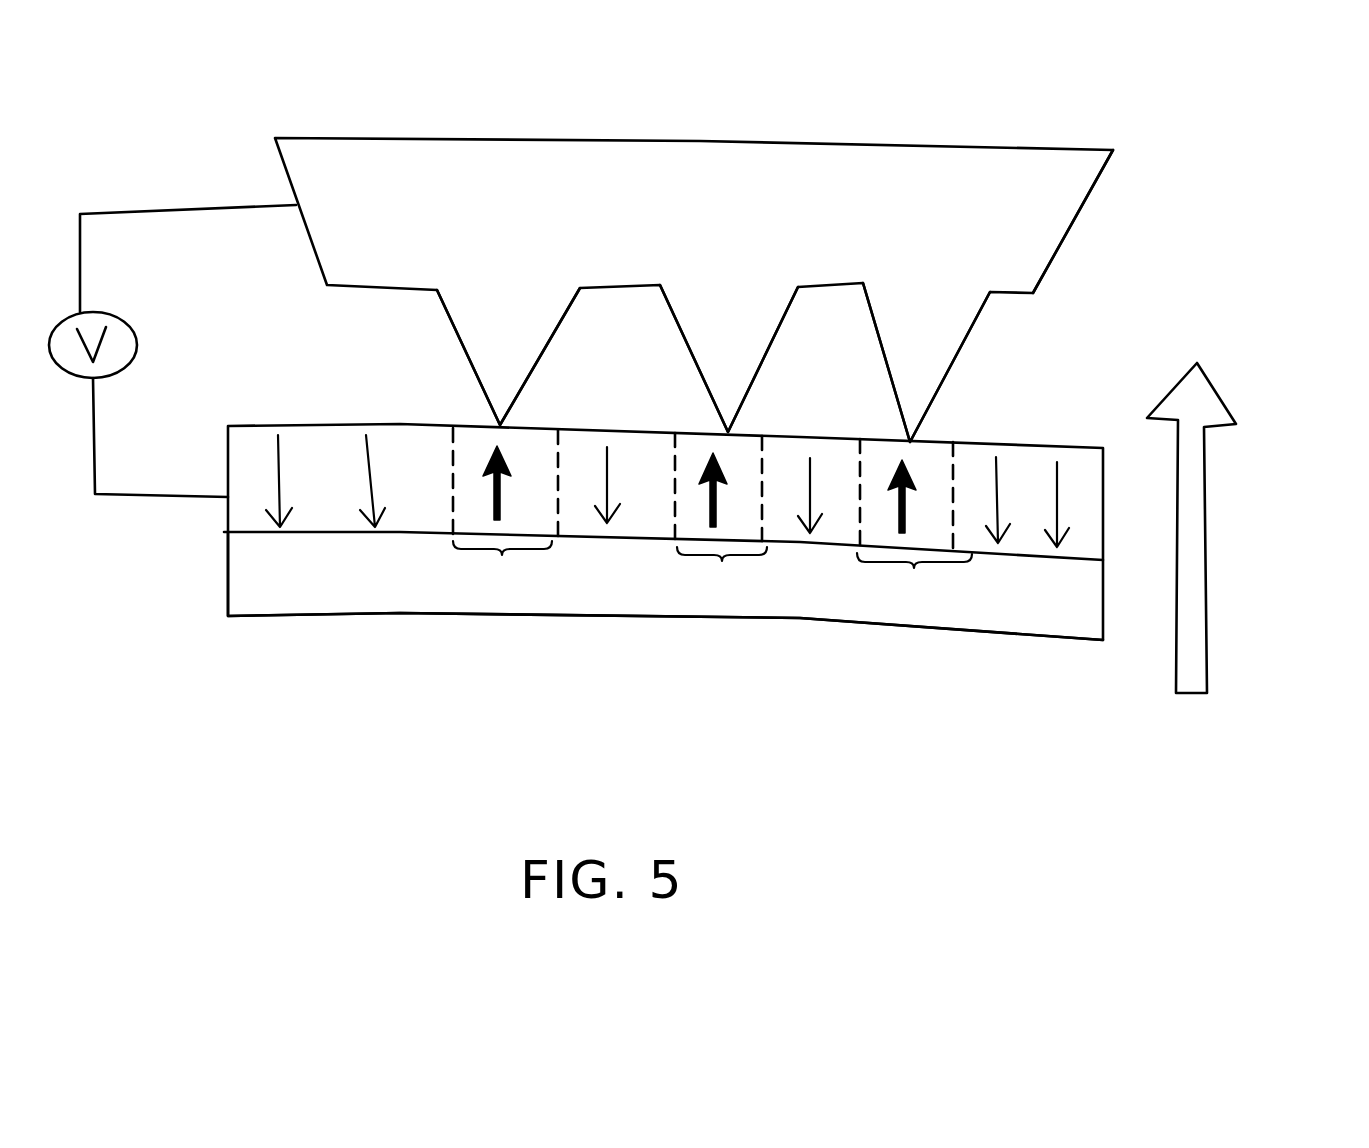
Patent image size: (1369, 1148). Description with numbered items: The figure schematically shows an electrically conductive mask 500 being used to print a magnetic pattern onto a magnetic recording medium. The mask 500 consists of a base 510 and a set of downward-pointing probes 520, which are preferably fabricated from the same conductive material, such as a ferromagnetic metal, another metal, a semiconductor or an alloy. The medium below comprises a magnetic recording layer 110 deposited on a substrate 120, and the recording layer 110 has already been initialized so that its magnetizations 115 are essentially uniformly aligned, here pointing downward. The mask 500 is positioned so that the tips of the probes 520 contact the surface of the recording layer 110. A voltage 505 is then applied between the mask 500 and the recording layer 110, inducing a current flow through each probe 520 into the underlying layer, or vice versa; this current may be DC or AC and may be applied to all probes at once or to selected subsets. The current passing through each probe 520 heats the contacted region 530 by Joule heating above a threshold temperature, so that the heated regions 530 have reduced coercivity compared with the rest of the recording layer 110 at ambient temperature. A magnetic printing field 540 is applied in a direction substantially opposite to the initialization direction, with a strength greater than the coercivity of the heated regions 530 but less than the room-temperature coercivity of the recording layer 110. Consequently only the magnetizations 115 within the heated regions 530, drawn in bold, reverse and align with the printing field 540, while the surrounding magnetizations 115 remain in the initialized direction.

The mask 500 is at (543, 238).
The base 510 is at (1081, 208).
The probes 520 is at (456, 338).
The voltage 505 is at (103, 311).
The magnetic recording layer 110 is at (226, 461).
The magnetizations 115 is at (270, 453).
The substrate 120 is at (226, 583).
The heated regions 530 is at (712, 574).
The magnetic printing field 540 is at (1253, 571).